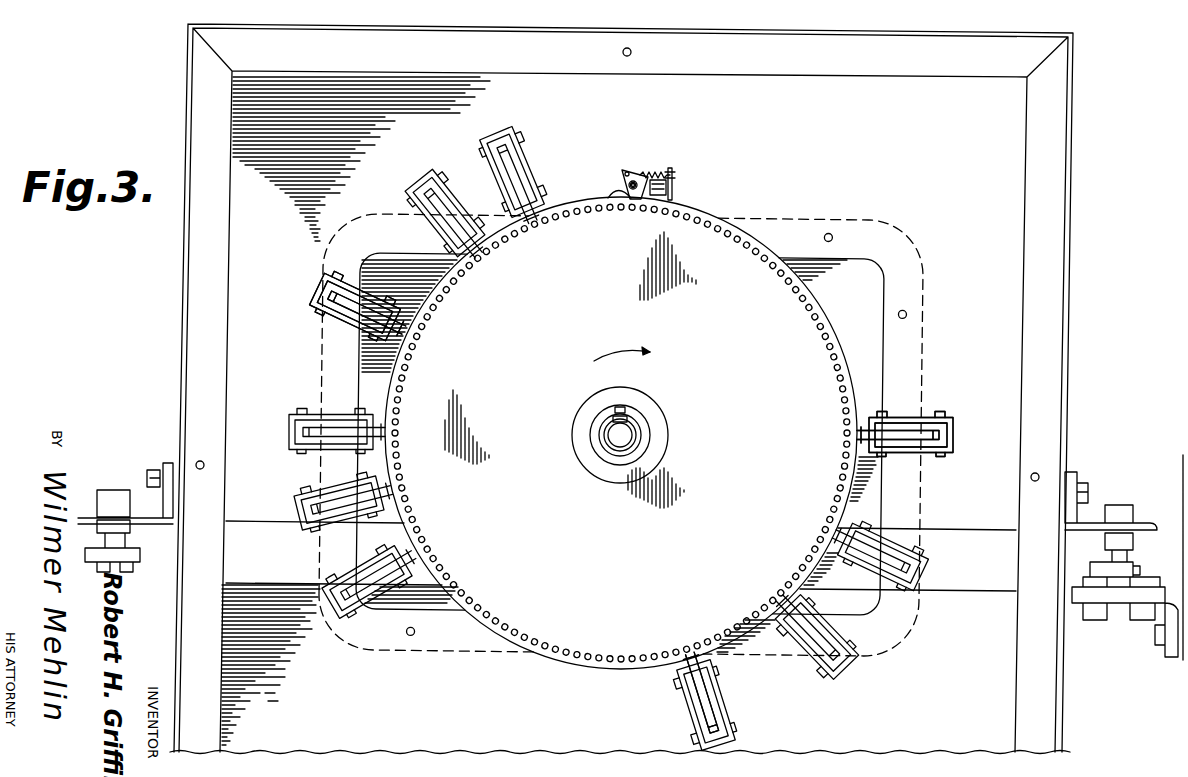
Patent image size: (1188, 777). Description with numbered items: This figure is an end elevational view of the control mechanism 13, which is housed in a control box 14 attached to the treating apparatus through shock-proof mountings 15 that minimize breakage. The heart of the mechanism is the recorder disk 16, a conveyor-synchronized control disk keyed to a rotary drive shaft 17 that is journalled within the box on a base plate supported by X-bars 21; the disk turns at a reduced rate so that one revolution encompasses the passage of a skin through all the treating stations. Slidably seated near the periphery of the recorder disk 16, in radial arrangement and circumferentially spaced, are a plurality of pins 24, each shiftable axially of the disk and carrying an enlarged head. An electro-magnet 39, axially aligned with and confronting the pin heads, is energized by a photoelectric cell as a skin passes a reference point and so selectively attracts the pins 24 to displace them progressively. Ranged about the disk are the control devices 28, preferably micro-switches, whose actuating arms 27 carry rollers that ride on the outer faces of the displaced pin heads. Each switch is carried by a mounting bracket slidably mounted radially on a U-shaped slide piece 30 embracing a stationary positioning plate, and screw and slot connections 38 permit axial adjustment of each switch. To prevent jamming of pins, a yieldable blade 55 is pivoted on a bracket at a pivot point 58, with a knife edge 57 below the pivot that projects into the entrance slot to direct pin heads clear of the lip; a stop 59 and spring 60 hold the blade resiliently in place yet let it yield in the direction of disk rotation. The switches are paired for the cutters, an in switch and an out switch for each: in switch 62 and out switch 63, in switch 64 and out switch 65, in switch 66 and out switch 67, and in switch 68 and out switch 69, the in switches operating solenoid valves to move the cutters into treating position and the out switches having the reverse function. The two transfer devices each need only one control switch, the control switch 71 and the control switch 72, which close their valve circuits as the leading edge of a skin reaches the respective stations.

The control mechanism 13 is at (724, 212).
The control box 14 is at (1050, 212).
The shock-proof mountings 15 is at (140, 550).
The recorder disk 16 is at (570, 403).
The rotary drive shaft 17 is at (618, 440).
The X-bars 21 is at (959, 590).
The pins 24 is at (784, 282).
The actuating arms 27 is at (360, 333).
The control devices 28 is at (335, 322).
The slide piece 30 is at (726, 704).
The screw and slot connections 38 is at (851, 640).
The electro-magnet 39 is at (611, 194).
The blade 55 is at (673, 194).
The knife edge 57 is at (630, 197).
The pivot point 58 is at (624, 178).
The stop 59 is at (644, 172).
The spring 60 is at (660, 170).
The in switch 62 is at (904, 544).
The out switch 63 is at (926, 418).
The in switch 64 is at (691, 712).
The out switch 65 is at (818, 668).
The in switch 66 is at (327, 411).
The out switch 67 is at (360, 560).
The in switch 68 is at (446, 200).
The out switch 69 is at (344, 278).
The control switch 71 is at (305, 530).
The control switch 72 is at (529, 178).